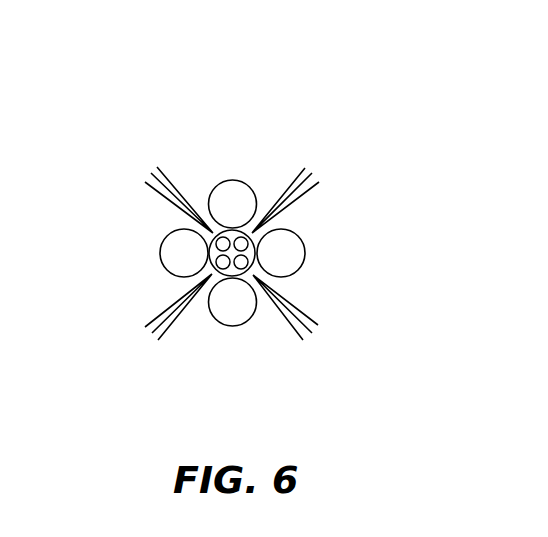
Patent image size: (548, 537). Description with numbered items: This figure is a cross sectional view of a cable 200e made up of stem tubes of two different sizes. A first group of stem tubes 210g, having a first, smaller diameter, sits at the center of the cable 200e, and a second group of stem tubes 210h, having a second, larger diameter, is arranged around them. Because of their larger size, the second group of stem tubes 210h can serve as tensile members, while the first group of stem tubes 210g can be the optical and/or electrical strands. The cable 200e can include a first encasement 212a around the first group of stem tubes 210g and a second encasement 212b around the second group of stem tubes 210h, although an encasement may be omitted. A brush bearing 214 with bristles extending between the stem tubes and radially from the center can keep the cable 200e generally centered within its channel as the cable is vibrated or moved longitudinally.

The cable 200e is at (371, 77).
The first group of stem tubes 210g is at (243, 243).
The second group of stem tubes 210h is at (222, 202).
The first encasement 212a is at (255, 234).
The second encasement 212b is at (340, 305).
The brush bearing 214 is at (296, 329).